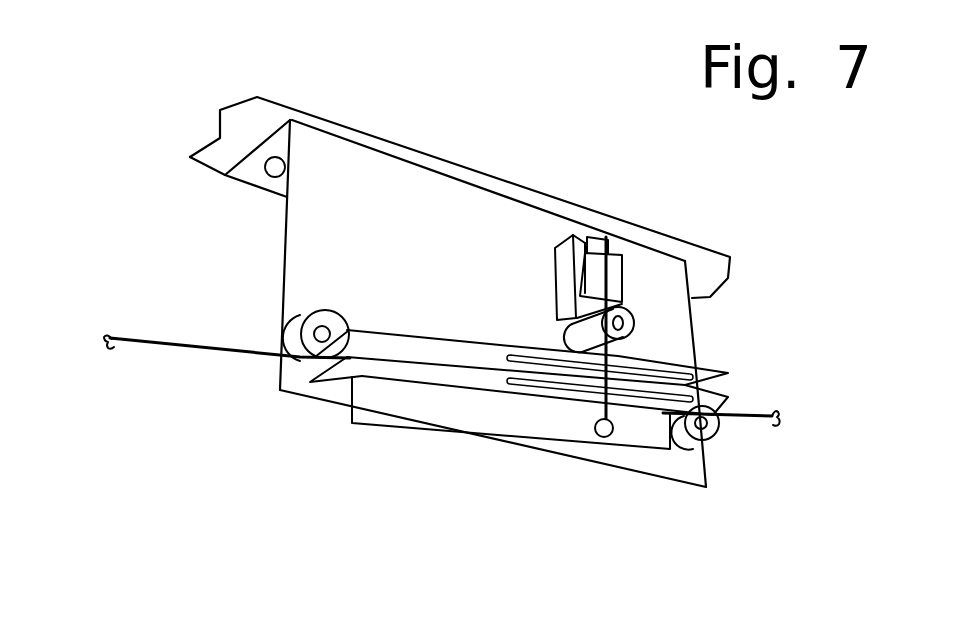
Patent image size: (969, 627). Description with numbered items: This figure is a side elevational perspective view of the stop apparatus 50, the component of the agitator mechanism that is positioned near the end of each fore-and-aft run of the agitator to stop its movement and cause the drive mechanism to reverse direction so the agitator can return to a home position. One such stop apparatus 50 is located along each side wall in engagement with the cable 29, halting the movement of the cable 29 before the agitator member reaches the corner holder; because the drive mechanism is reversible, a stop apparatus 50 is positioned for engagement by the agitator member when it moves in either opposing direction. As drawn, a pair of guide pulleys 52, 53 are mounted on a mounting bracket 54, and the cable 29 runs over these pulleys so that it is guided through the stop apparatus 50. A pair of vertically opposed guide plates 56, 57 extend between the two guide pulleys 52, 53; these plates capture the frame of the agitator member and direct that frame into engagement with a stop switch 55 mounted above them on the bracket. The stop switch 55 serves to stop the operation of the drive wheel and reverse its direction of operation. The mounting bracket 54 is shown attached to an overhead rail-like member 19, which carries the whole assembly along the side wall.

The mounting bar / frame rail 19 is at (318, 117).
The wire rod 29 is at (142, 345).
The tensioning assembly 50 is at (500, 493).
The left roller 52 is at (305, 312).
The right roller 53 is at (715, 448).
The mounting plate 54 is at (286, 229).
The solenoid actuator 55 is at (636, 347).
The upper slotted plate 56 is at (437, 338).
The lower slotted plate 57 is at (432, 382).